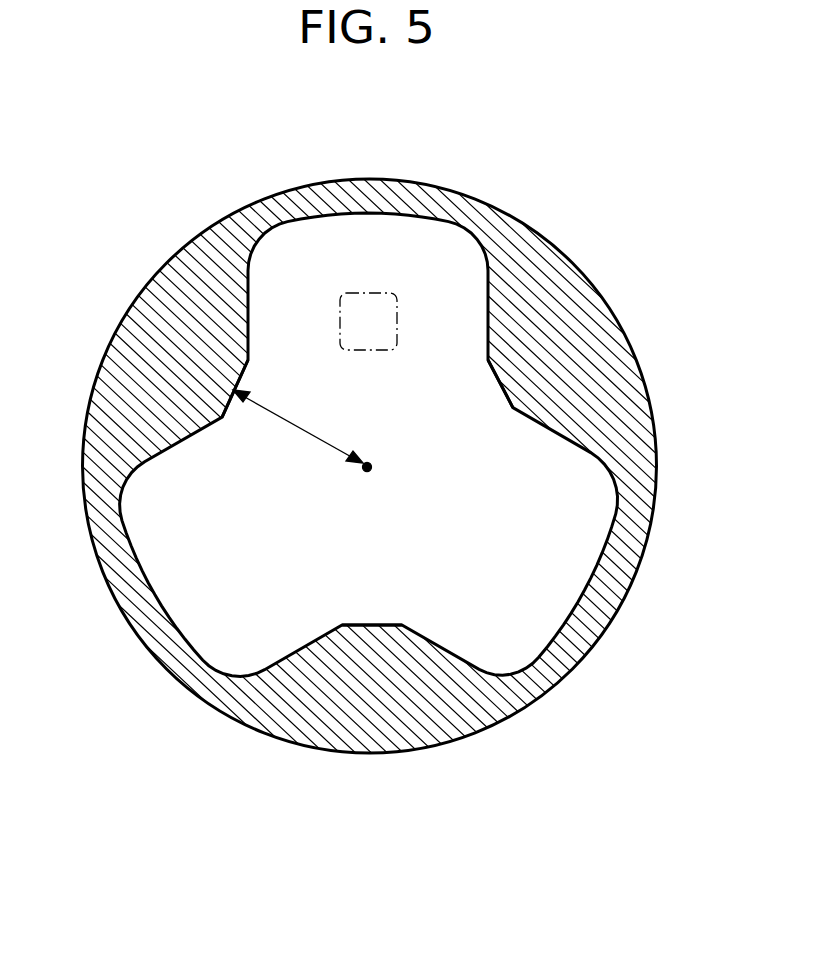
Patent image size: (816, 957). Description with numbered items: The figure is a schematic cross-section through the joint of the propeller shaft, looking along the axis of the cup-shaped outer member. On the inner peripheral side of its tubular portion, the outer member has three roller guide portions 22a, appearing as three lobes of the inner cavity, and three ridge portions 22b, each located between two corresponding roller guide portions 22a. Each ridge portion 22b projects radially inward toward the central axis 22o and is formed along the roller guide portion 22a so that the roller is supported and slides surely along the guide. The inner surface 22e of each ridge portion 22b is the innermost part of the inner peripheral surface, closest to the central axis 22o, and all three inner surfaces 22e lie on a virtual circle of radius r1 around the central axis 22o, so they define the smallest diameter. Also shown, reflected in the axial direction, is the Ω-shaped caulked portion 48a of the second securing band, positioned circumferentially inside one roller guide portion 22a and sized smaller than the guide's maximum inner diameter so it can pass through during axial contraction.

The roller guide portion 22a is at (422, 216).
The ridge portion 22b is at (217, 382).
The inner surface 22e is at (224, 412).
The central axis 22o is at (370, 470).
The caulked portion 48a is at (378, 292).
The radius r1 is at (298, 426).